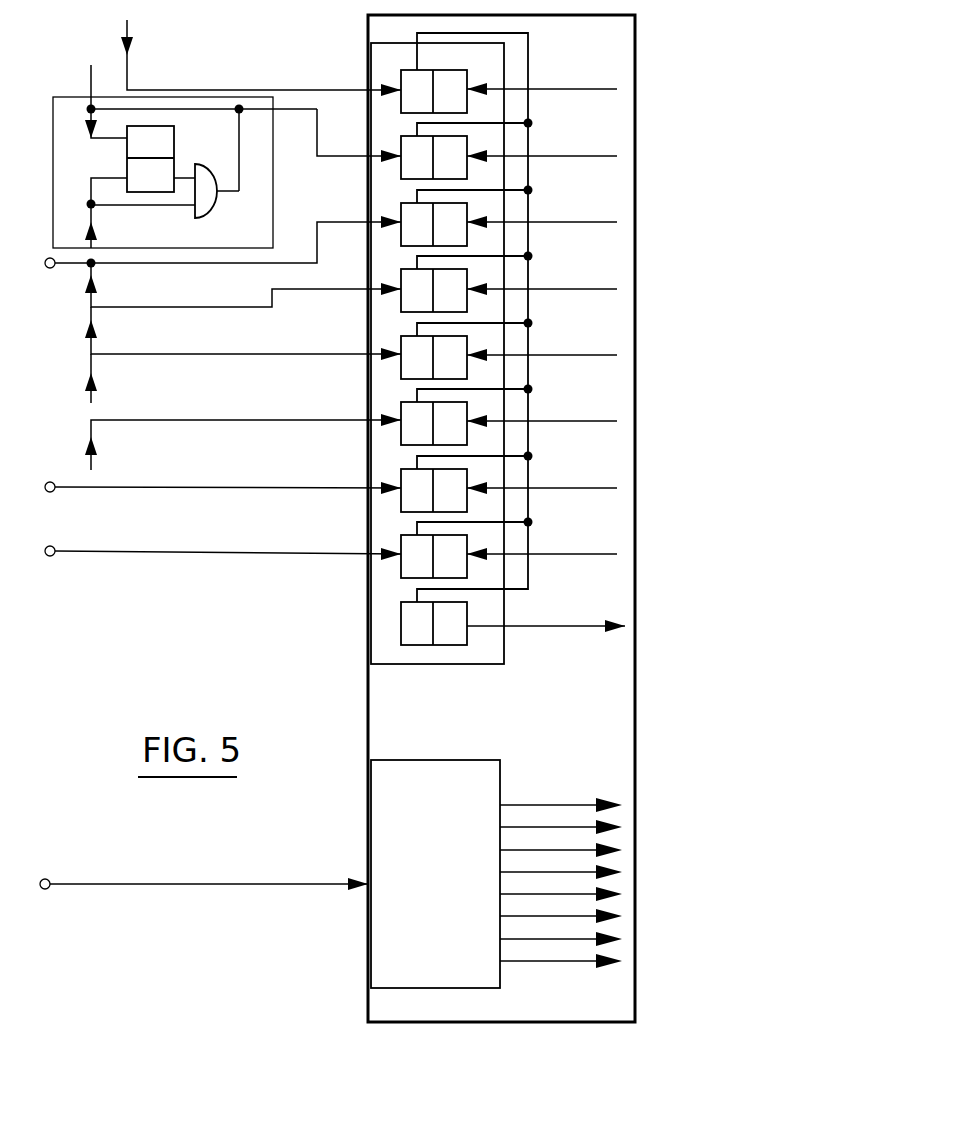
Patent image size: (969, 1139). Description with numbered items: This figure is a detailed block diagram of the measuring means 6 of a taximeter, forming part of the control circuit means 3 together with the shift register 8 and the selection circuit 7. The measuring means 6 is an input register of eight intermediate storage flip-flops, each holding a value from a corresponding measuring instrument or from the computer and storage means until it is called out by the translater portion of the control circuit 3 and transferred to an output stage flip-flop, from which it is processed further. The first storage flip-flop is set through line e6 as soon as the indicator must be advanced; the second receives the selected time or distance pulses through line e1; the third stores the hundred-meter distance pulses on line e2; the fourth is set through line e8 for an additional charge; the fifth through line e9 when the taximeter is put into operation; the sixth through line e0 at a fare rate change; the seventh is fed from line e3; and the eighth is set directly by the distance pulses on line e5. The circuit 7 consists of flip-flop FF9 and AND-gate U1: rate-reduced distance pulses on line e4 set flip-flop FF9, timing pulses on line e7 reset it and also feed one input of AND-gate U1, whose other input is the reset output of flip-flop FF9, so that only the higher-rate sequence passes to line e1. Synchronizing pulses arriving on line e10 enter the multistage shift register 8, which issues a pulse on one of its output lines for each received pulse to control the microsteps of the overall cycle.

The control circuit means 3 is at (512, 728).
The measuring means 6 is at (366, 60).
The circuit 7 is at (219, 151).
The shift register 8 is at (437, 897).
The flip-flop FF9 is at (135, 173).
The AND-gate U1 is at (203, 207).
The input line e0 is at (311, 409).
The input line e1 is at (352, 144).
The input line e2 is at (285, 251).
The input line e3 is at (311, 477).
The input line e4 is at (90, 78).
The input line e5 is at (311, 542).
The input line e6 is at (277, 76).
The input line e7 is at (88, 222).
The input line e8 is at (310, 297).
The input line e9 is at (311, 342).
The input line e10 is at (320, 883).